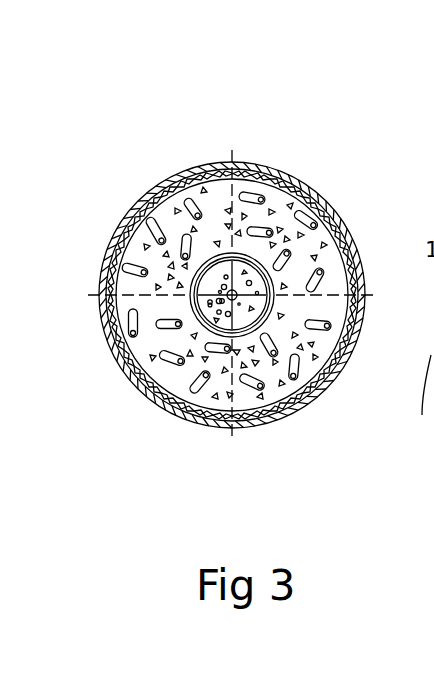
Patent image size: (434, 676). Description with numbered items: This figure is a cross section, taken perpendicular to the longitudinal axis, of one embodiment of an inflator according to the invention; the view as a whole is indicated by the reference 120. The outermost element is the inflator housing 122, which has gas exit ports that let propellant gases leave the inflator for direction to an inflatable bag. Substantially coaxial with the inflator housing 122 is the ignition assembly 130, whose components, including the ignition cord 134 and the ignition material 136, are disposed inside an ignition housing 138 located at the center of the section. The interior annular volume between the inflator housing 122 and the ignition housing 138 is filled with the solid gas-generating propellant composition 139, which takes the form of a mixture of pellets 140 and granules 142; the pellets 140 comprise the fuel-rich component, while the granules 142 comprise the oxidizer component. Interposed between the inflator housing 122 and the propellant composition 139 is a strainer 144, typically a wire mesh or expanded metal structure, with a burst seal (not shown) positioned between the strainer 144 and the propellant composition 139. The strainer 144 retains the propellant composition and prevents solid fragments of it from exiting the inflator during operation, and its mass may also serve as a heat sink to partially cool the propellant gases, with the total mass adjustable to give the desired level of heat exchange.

The tube assembly 120 is at (252, 130).
The inflator housing 122 is at (290, 172).
The pellets 140 is at (312, 195).
The granules 142 is at (322, 242).
The strainer 144 is at (291, 397).
The solid gas-generating propellant composition 139 is at (212, 384).
The ignition housing 138 is at (210, 255).
The ignition material 136 is at (197, 285).
The ignition cord 134 is at (226, 305).
The ignition assembly 130 is at (417, 402).